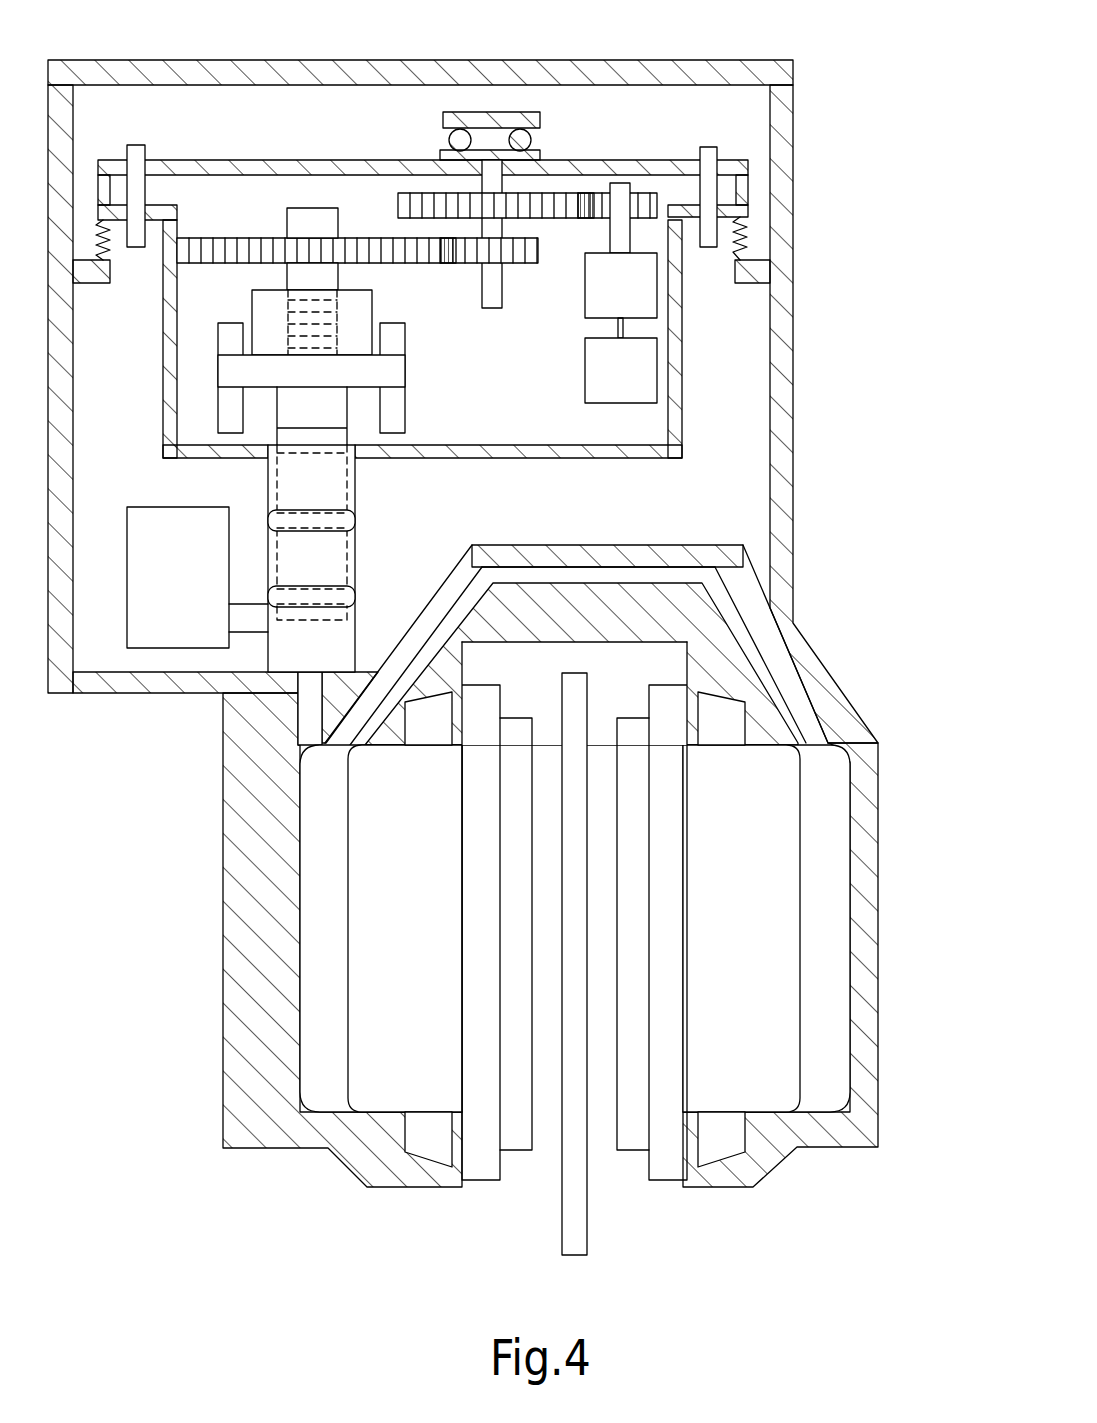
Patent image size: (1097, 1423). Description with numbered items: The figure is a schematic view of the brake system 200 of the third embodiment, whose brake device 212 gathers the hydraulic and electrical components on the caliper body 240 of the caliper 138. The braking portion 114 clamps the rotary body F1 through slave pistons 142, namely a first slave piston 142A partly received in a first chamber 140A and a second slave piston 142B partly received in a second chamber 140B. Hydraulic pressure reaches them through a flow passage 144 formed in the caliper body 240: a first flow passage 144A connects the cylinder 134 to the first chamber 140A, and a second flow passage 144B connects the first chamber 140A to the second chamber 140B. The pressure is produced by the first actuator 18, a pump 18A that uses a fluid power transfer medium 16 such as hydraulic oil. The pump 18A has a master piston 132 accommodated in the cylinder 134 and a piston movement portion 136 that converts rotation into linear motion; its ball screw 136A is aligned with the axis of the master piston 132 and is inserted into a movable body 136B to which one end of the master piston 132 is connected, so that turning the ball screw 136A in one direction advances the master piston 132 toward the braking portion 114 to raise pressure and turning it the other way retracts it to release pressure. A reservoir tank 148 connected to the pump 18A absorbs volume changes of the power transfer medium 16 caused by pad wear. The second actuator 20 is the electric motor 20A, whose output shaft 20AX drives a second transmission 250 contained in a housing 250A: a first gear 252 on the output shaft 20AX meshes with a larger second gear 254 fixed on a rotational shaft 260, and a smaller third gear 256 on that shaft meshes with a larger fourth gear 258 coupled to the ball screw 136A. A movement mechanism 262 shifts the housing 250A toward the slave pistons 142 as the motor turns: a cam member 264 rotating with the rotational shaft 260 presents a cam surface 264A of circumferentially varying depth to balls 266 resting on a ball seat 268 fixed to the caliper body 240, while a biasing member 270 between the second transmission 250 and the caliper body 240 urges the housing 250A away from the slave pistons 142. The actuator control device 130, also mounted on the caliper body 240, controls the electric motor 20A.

The brake system 200 is at (856, 66).
The brake device 212 is at (839, 178).
The braking portion 114 is at (821, 600).
The caliper 138 is at (876, 863).
The caliper body 240 is at (876, 920).
The flow passage 144 is at (570, 572).
The first flow passage 144A is at (310, 720).
The second flow passage 144B is at (627, 572).
The first chamber 140A is at (335, 905).
The second chamber 140B is at (815, 980).
The slave pistons 142 is at (492, 1257).
The first slave piston 142A is at (393, 1090).
The second slave piston 142B is at (755, 1090).
The rotary body F1 is at (575, 1258).
The first gear 252 is at (663, 197).
The second transmission 250 is at (210, 145).
The housing 250A is at (295, 160).
The biasing member 270 is at (110, 247).
The movement mechanism 262 is at (593, 140).
The ball seat 268 is at (500, 112).
The balls 266 is at (533, 137).
The cam member 264 is at (447, 150).
The cam surface 264A is at (452, 133).
The rotational shaft 260 is at (490, 310).
The second gear 254 is at (545, 222).
The third gear 256 is at (452, 265).
The fourth gear 258 is at (355, 238).
The second actuator 20 is at (555, 335).
The electric motor 20A is at (583, 297).
The output shaft 20AX is at (620, 183).
The actuator control device 130 is at (600, 403).
The piston movement portion 136 is at (245, 272).
The ball screw 136A is at (287, 222).
The movable body 136B is at (405, 372).
The first actuator 18 is at (421, 515).
The cylinder 134 is at (268, 478).
The master piston 132 is at (347, 483).
The pump 18A is at (357, 545).
The power transfer medium 16 is at (345, 640).
The reservoir tank 148 is at (127, 570).